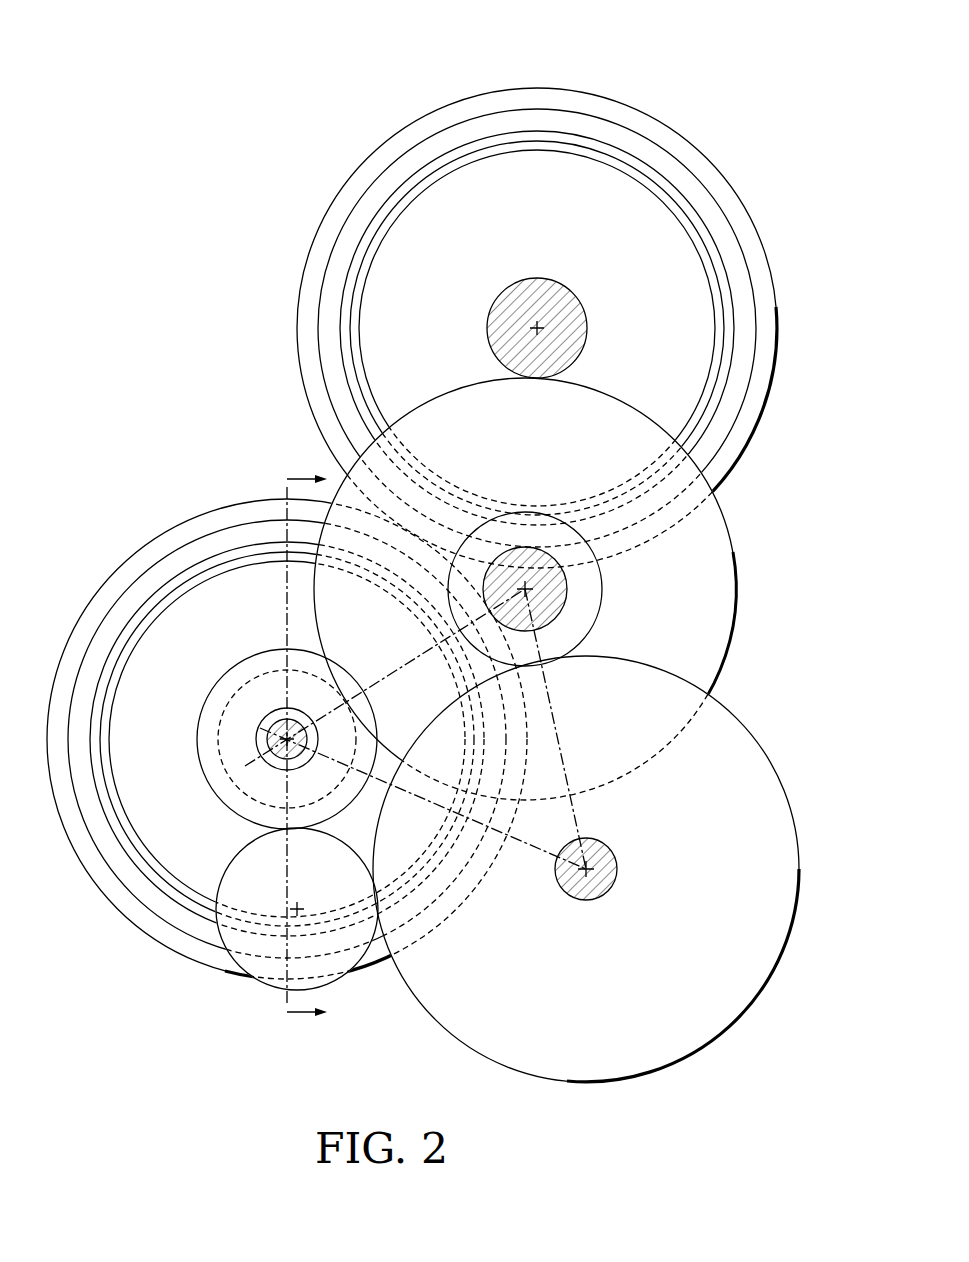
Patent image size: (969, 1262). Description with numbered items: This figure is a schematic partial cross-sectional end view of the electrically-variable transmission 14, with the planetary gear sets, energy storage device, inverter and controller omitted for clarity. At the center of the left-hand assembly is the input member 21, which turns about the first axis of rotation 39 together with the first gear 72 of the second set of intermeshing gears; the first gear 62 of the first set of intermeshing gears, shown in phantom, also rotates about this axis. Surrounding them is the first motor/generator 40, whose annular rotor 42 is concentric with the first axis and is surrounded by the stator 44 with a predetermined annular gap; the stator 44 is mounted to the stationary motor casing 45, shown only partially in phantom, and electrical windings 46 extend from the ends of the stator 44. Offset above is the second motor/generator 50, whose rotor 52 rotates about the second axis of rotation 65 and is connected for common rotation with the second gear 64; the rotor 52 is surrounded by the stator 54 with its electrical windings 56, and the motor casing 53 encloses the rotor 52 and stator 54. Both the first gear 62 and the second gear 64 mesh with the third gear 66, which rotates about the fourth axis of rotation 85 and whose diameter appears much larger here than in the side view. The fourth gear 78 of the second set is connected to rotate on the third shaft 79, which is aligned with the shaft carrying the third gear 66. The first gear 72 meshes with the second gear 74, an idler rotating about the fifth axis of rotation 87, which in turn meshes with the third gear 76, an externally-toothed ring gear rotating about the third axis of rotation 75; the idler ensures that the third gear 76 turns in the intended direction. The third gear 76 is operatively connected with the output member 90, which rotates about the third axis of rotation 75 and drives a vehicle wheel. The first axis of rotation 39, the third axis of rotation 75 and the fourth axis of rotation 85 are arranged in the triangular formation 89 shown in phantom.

The electrically-variable transmission 14 is at (370, 107).
The input member 21 is at (280, 735).
The first axis of rotation 39 is at (276, 735).
The first motor/generator 40 is at (180, 972).
The rotor 42 is at (197, 568).
The stator 44 is at (130, 565).
The motor casing 45 is at (202, 512).
The electrical windings 46 is at (248, 528).
The second motor/generator 50 is at (478, 62).
The rotor 52 is at (695, 220).
The motor casing 53 is at (540, 88).
The stator 54 is at (640, 120).
The electrical windings 56 is at (680, 173).
The first gear 62 is at (215, 745).
The second gear 64 is at (540, 278).
The second axis of rotation 65 is at (537, 328).
The third gear 66 is at (740, 580).
The first gear 72 is at (222, 810).
The second gear 74 is at (325, 990).
The third axis of rotation 75 is at (586, 869).
The third gear 76 is at (442, 1029).
The fourth gear 78 is at (602, 588).
The third shaft 79 is at (556, 556).
The fourth axis of rotation 85 is at (532, 583).
The fifth axis of rotation 87 is at (297, 909).
The triangular formation 89 is at (563, 762).
The output member 90 is at (614, 851).